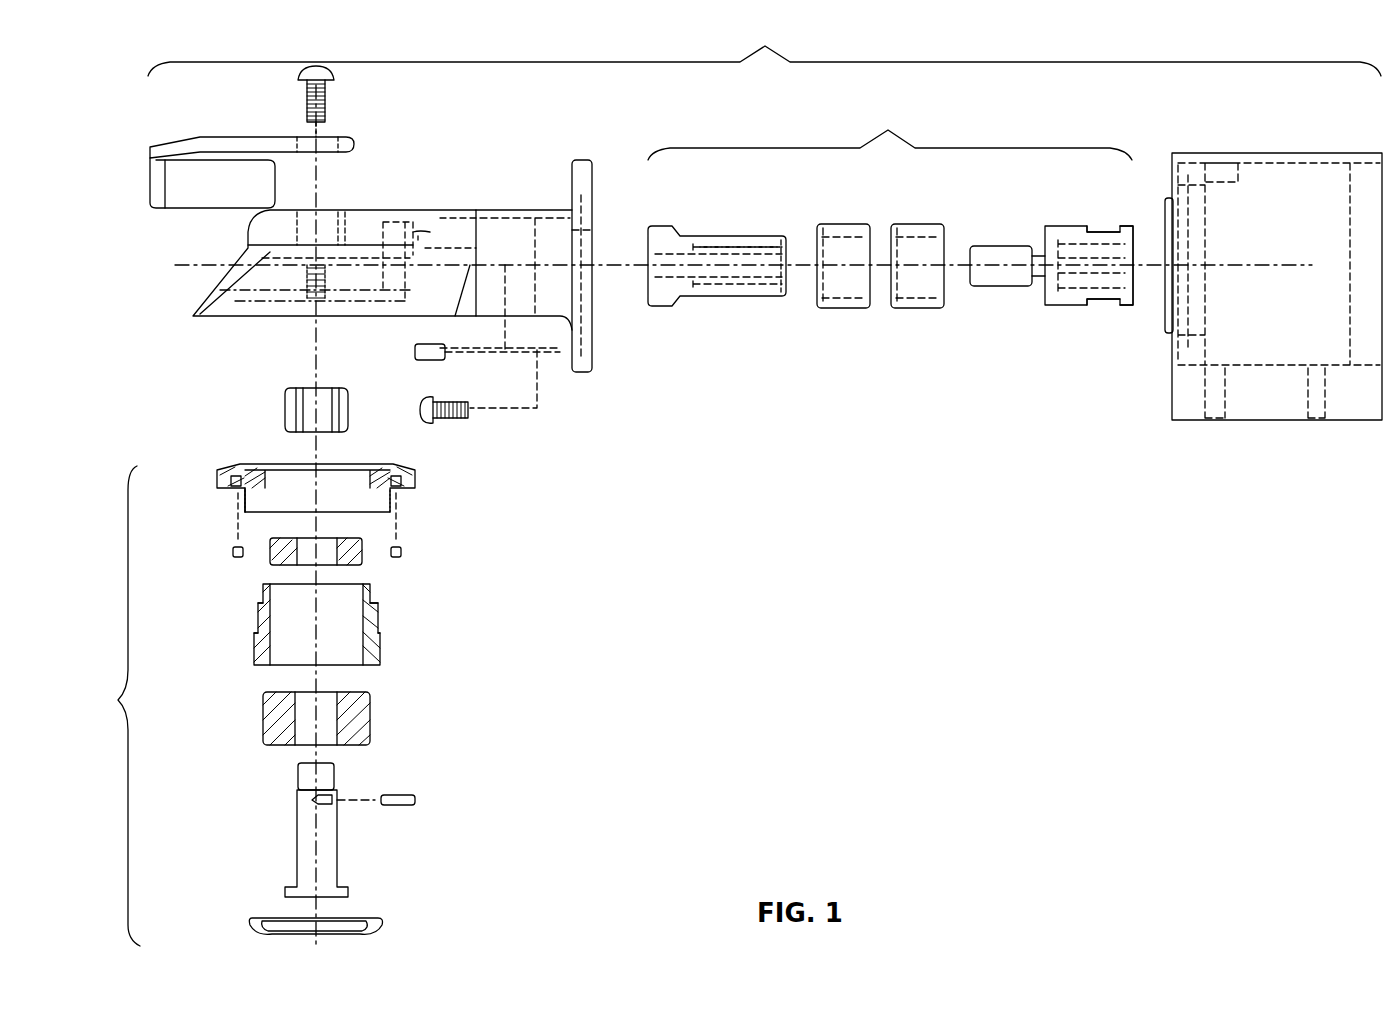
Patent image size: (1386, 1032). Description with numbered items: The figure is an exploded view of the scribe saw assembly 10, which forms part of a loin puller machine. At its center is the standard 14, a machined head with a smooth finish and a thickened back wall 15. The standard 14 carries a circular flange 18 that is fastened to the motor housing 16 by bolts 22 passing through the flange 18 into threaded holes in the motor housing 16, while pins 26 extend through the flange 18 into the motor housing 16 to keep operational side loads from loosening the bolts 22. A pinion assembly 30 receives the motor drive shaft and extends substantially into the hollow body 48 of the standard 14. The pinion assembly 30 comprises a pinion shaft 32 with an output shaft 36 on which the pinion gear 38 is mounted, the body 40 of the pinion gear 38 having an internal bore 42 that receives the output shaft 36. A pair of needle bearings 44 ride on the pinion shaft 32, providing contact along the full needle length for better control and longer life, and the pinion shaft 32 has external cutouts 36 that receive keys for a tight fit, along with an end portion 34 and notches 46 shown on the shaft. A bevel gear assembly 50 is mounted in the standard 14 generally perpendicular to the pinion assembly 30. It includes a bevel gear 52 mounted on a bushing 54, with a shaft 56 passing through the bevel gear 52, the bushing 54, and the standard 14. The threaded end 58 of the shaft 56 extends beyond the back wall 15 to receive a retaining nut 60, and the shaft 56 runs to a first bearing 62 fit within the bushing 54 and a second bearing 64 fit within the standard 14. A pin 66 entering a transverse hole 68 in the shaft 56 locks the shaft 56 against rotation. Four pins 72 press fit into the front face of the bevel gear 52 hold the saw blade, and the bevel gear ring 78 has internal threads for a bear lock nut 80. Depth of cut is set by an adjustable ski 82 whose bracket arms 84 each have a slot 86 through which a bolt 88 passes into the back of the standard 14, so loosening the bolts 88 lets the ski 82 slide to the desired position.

The scribe saw assembly 10 is at (764, 45).
The standard 14 is at (455, 210).
The back wall 15 is at (358, 210).
The motor housing 16 is at (1222, 153).
The circular flange 18 is at (590, 160).
The bolts 22 is at (455, 420).
The pins 26 is at (415, 350).
The pinion assembly 30 is at (890, 127).
The pinion shaft 32 is at (1058, 306).
The end portion 34 is at (1135, 268).
The output shaft 36 is at (1020, 246).
The pinion gear 38 is at (655, 235).
The body 40 is at (757, 244).
The internal bore 42 is at (790, 252).
The needle bearings 44 is at (842, 224).
The notches 46 is at (1096, 229).
The hollow body 48 is at (560, 212).
The bevel gear assembly 50 is at (111, 706).
The bevel gear 52 is at (235, 470).
The bushing 54 is at (255, 650).
The shaft 56 is at (305, 827).
The end 58 is at (297, 775).
The retaining nut 60 is at (283, 410).
The first bearing 62 is at (263, 722).
The second bearing 64 is at (362, 552).
The pin 66 is at (398, 806).
The transverse hole 68 is at (340, 797).
The pins 72 is at (232, 552).
The bevel gear ring 78 is at (244, 498).
The bear lock nut 80 is at (255, 925).
The adjustable ski 82 is at (172, 144).
The arms 84 is at (354, 146).
The slot 86 is at (327, 138).
The bolt 88 is at (334, 74).